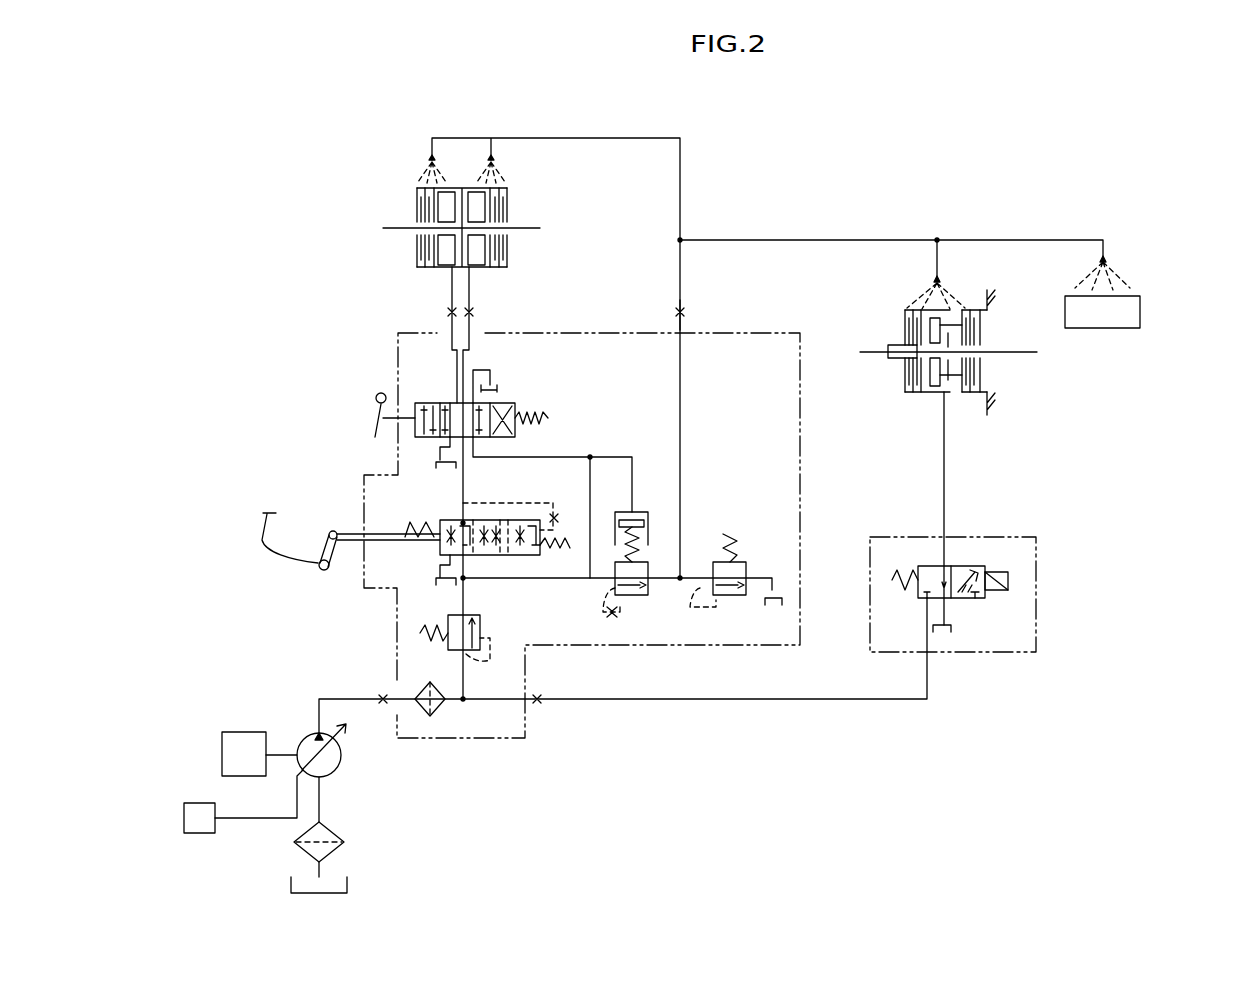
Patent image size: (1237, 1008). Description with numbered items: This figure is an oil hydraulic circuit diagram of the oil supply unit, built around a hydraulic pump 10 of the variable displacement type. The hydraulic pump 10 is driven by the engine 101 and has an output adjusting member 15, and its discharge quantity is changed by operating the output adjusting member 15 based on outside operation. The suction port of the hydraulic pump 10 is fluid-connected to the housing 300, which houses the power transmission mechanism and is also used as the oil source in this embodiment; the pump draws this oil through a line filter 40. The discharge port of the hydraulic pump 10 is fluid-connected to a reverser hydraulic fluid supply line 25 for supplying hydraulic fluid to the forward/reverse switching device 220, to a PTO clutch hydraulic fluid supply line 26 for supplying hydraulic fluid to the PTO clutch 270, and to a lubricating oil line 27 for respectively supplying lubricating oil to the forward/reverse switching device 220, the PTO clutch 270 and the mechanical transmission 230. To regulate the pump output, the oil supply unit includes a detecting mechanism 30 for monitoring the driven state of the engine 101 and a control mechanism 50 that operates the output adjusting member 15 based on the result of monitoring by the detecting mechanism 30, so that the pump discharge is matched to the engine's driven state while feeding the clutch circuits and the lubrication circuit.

The hydraulic pump 10 is at (302, 722).
The output adjusting member 15 is at (343, 741).
The reverser hydraulic fluid supply line 25 is at (463, 597).
The PTO clutch hydraulic fluid supply line 26 is at (928, 675).
The lubricating oil line 27 is at (680, 276).
The detecting mechanism 30 is at (188, 803).
The line filter 40 is at (345, 822).
The control mechanism 50 is at (252, 822).
The engine 101 is at (243, 732).
The forward/reverse switching device 220 is at (392, 199).
The mechanical transmission 230 is at (1152, 318).
The PTO clutch 270 is at (893, 318).
The housing 300 is at (323, 895).